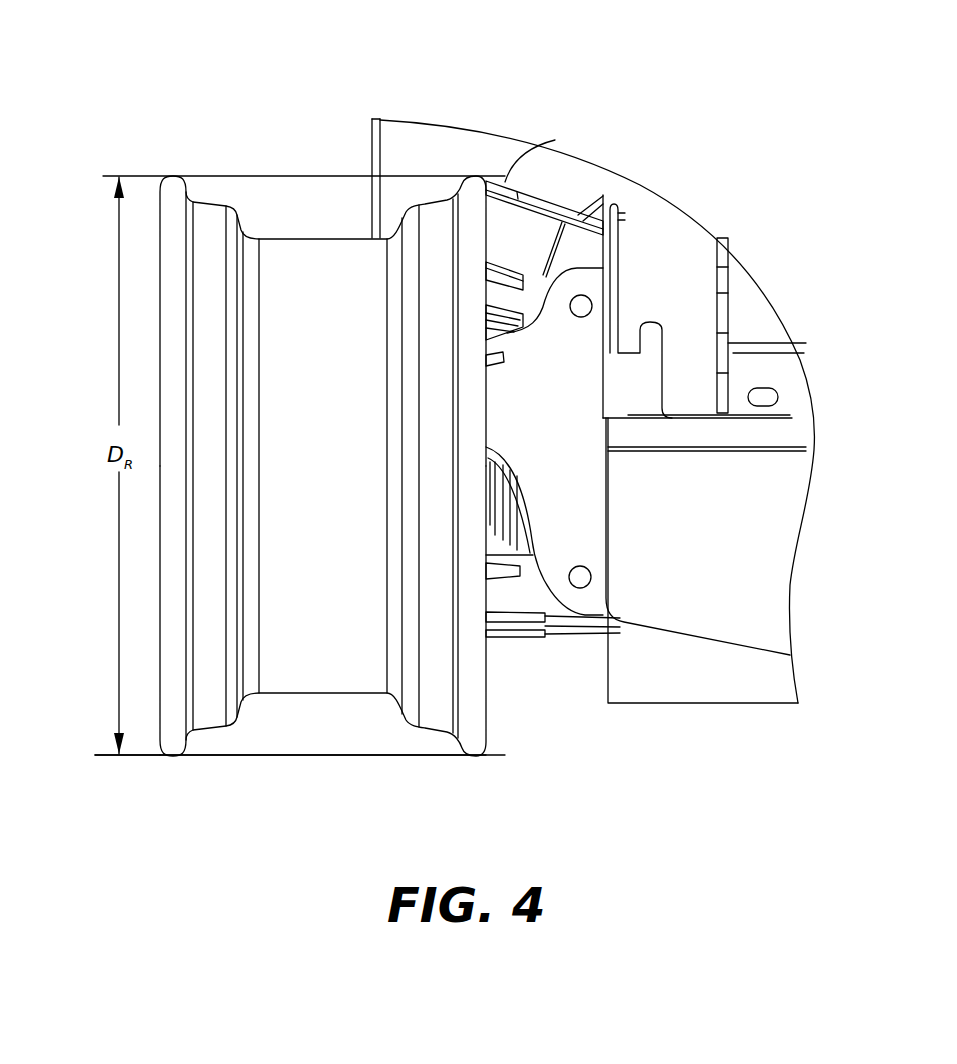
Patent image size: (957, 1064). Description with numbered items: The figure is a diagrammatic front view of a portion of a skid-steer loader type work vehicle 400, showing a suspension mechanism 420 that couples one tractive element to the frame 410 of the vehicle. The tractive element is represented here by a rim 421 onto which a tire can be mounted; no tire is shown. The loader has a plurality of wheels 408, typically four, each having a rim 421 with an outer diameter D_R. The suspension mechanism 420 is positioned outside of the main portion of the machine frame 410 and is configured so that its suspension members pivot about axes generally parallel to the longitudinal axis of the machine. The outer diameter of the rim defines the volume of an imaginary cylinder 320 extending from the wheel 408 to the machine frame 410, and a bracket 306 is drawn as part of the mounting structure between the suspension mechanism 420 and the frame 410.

The work vehicle 400 is at (372, 68).
The suspension mechanism 420 is at (512, 155).
The rim 421 is at (303, 375).
The bracket plate 306 is at (590, 540).
The frame 410 is at (767, 683).
The imaginary cylinder 320 is at (132, 757).
The wheel 408 is at (292, 768).